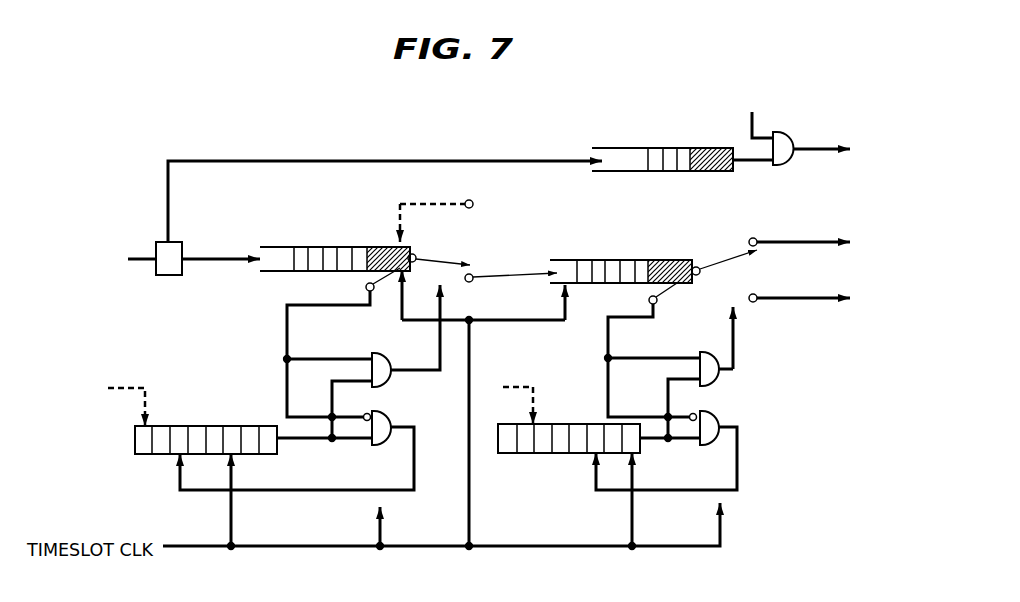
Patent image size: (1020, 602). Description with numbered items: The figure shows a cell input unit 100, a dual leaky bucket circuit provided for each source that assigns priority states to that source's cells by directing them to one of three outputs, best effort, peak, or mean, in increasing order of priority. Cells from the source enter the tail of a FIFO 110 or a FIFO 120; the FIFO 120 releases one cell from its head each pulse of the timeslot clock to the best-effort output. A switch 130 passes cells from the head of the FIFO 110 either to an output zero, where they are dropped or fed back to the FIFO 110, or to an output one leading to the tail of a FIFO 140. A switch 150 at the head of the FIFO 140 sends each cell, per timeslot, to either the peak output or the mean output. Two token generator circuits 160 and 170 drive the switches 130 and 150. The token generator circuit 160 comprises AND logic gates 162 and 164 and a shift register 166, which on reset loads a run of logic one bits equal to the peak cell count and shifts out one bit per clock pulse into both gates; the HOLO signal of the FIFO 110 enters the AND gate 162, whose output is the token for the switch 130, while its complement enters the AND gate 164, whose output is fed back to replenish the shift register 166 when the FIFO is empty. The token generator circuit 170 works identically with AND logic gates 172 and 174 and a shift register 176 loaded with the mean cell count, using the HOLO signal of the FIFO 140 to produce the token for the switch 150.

The cell input unit 100 is at (254, 133).
The FIFO 110 is at (303, 247).
The FIFO 120 is at (655, 148).
The switch 130 is at (445, 240).
The FIFO 140 is at (597, 261).
The switch 150 is at (725, 262).
The token generator circuit 160 is at (122, 339).
The AND logic gate 162 is at (390, 374).
The AND logic gate 164 is at (372, 443).
The shift register 166 is at (208, 426).
The token generator circuit 170 is at (733, 400).
The AND logic gate 172 is at (718, 373).
The AND logic gate 174 is at (703, 446).
The shift register 176 is at (565, 424).